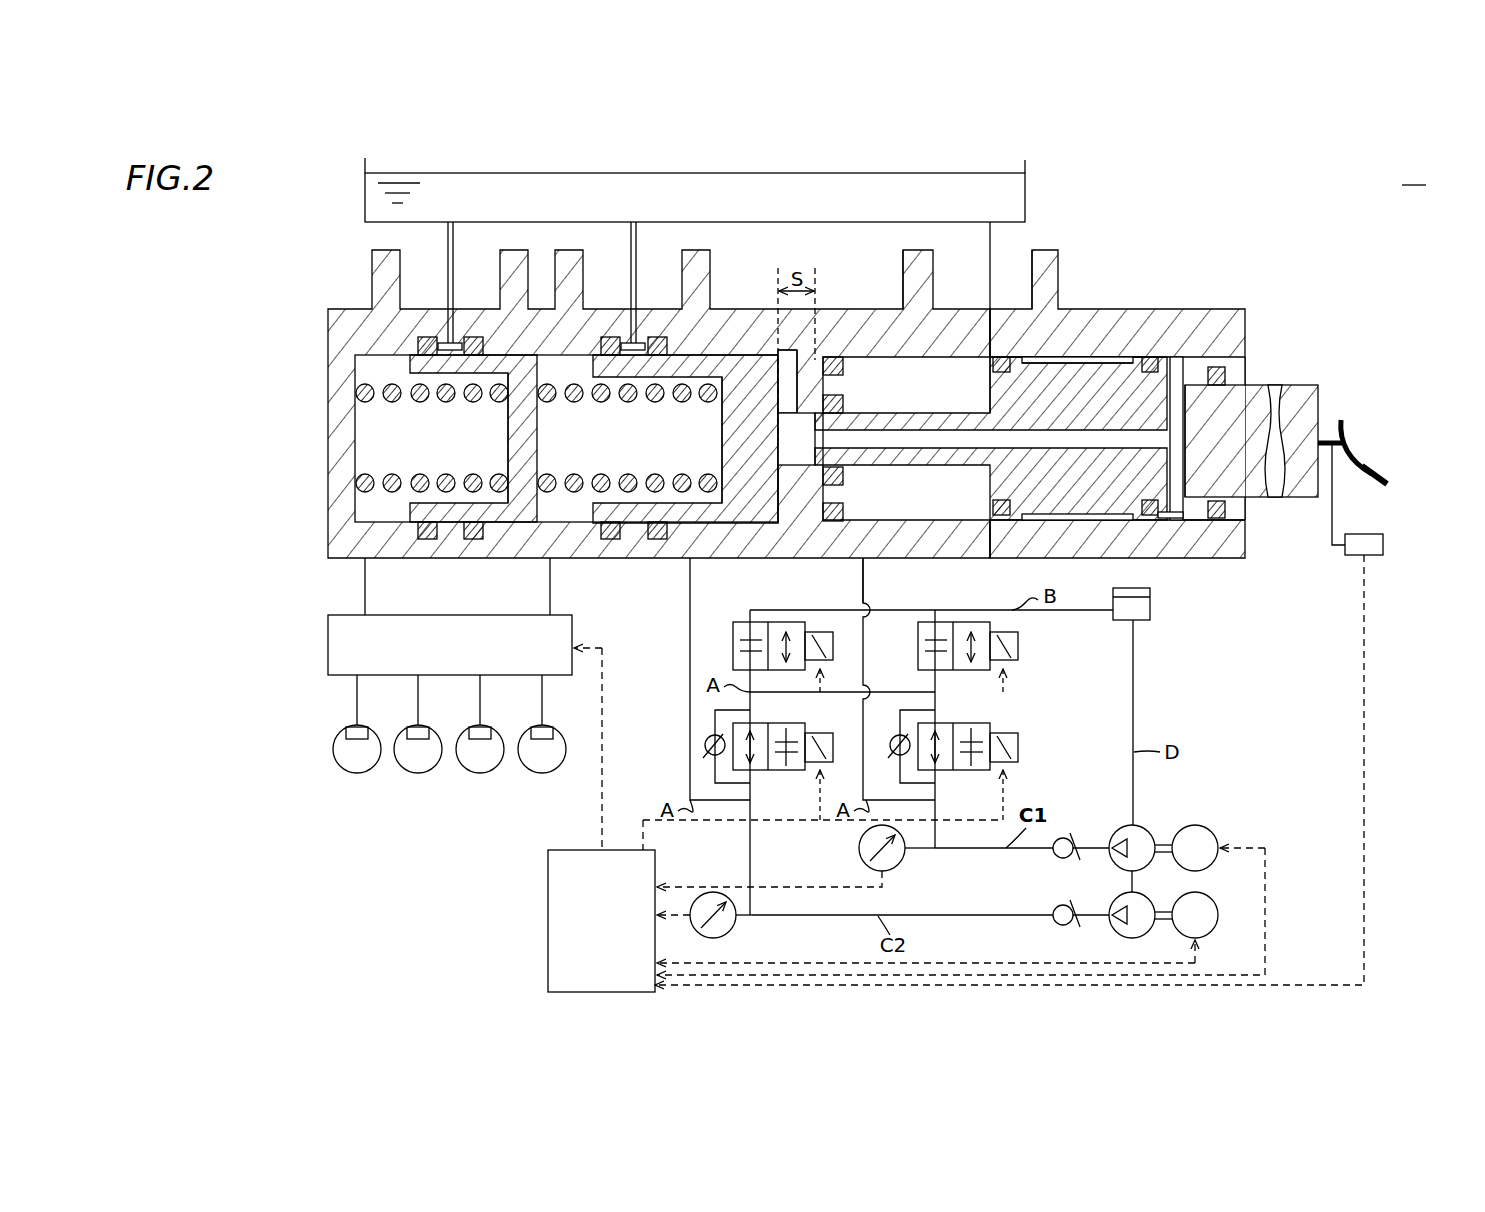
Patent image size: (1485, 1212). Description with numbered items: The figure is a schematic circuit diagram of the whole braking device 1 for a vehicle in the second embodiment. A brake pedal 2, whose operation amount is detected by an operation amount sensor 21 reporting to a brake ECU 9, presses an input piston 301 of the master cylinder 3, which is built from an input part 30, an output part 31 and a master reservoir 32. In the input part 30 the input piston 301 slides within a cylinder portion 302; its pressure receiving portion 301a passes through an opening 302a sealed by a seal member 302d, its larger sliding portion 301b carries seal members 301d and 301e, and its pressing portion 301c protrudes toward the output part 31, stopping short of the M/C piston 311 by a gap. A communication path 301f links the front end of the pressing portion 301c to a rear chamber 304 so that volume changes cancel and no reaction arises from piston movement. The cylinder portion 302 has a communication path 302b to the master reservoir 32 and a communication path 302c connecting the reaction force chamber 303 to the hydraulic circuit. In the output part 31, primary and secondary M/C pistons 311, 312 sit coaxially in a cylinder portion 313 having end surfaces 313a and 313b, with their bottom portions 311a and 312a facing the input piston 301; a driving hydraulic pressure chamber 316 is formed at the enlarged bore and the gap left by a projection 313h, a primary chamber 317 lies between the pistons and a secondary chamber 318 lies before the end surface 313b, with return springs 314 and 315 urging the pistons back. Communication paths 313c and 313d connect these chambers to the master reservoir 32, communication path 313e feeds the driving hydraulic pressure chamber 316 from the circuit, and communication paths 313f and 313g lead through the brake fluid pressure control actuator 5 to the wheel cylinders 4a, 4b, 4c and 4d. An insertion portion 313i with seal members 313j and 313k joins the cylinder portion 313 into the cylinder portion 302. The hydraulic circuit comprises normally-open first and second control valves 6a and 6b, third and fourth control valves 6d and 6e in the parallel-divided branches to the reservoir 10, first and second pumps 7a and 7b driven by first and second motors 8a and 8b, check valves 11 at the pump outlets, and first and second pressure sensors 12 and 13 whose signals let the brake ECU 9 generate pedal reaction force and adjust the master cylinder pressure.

The braking device 1 is at (1395, 242).
The brake pedal 2 is at (1389, 470).
The M/C 3 is at (1078, 244).
The W/C 4a is at (363, 728).
The W/C 4b is at (425, 728).
The W/C 4c is at (487, 728).
The W/C 4d is at (548, 728).
The brake fluid pressure control actuator 5 is at (328, 648).
The first control valve 6a is at (953, 723).
The second control valve 6b is at (768, 723).
The third control valve 6d is at (1000, 623).
The fourth control valve 6e is at (805, 623).
The first pump 7a is at (1136, 825).
The second pump 7b is at (1149, 894).
The first motor 8a is at (1200, 825).
The second motor 8b is at (1212, 894).
The brake ECU 9 is at (548, 885).
The atmospheric reservoir 10 is at (1123, 620).
The check valves 11 is at (715, 755).
The first pressure sensor 12 is at (859, 848).
The second pressure sensor 13 is at (734, 930).
The operation amount sensor 21 is at (1384, 545).
The input part 30 is at (1198, 304).
The output part 31 is at (346, 303).
The master reservoir 32 is at (1027, 187).
The input piston 301 is at (1244, 474).
The pressure receiving portion 301a is at (1296, 500).
The sliding portion 301b is at (1096, 375).
The pressing portion 301c is at (958, 420).
The seal member 301d is at (1098, 382).
The seal member 301e is at (1128, 360).
The communication path 301f is at (1176, 522).
The cylinder portion 302 is at (1220, 328).
The opening 302a is at (1248, 392).
The communication path 302b is at (1006, 325).
The communication path 302c is at (893, 545).
The seal member 302d is at (1238, 393).
The reaction force chamber 303 is at (915, 380).
The rear chamber 304 is at (1178, 560).
The M/C piston 311 is at (740, 525).
The bottom portion 311a is at (726, 535).
The M/C piston 312 is at (527, 510).
The bottom portion 312a is at (523, 383).
The cylinder portion 313 is at (356, 330).
The one end surface 313a is at (873, 540).
The other end surface 313b is at (357, 495).
The communication path 313c is at (640, 340).
The communication path 313d is at (456, 340).
The communication path 313e is at (690, 630).
The communication path 313f is at (606, 541).
The communication path 313g is at (396, 548).
The projection 313h is at (770, 540).
The insertion portion 313i is at (845, 398).
The seal member 313j is at (832, 357).
The seal member 313k is at (868, 395).
The return spring 314 is at (656, 530).
The return spring 315 is at (471, 540).
The driving hydraulic pressure chamber 316 is at (782, 523).
The primary chamber 317 is at (598, 455).
The secondary chamber 318 is at (372, 437).